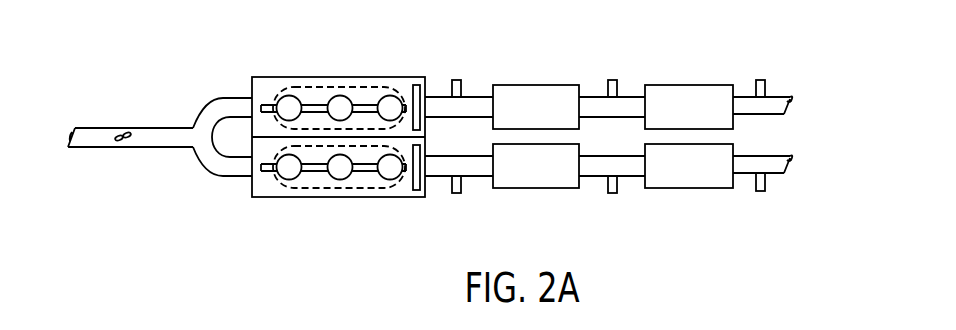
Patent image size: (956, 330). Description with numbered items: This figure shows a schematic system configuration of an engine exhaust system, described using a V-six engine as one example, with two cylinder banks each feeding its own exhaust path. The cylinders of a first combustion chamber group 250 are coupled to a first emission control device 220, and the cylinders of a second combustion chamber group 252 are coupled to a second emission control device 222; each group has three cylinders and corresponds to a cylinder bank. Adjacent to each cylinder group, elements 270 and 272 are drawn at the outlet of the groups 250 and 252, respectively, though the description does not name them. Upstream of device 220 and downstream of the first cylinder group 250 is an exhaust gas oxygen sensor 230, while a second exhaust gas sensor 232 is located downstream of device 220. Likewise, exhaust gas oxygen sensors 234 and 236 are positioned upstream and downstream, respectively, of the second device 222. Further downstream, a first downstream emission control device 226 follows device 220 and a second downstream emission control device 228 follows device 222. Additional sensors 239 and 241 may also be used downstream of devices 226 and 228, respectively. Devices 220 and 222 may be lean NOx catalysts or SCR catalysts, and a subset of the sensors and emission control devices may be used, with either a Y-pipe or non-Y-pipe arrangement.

The first emission control device 220 is at (522, 119).
The second emission control device 222 is at (522, 178).
The first downstream emission control device 226 is at (675, 119).
The second downstream emission control device 228 is at (675, 178).
The exhaust gas oxygen sensor 230 is at (457, 79).
The second exhaust gas sensor 232 is at (613, 79).
The exhaust gas oxygen sensor 234 is at (457, 194).
The exhaust gas oxygen sensor 236 is at (613, 194).
The additional sensor 239 is at (761, 79).
The additional sensor 241 is at (761, 192).
The first combustion chamber group 250 is at (310, 87).
The second combustion chamber group 252 is at (308, 187).
The connector board 270 is at (416, 85).
The connector board 272 is at (416, 190).